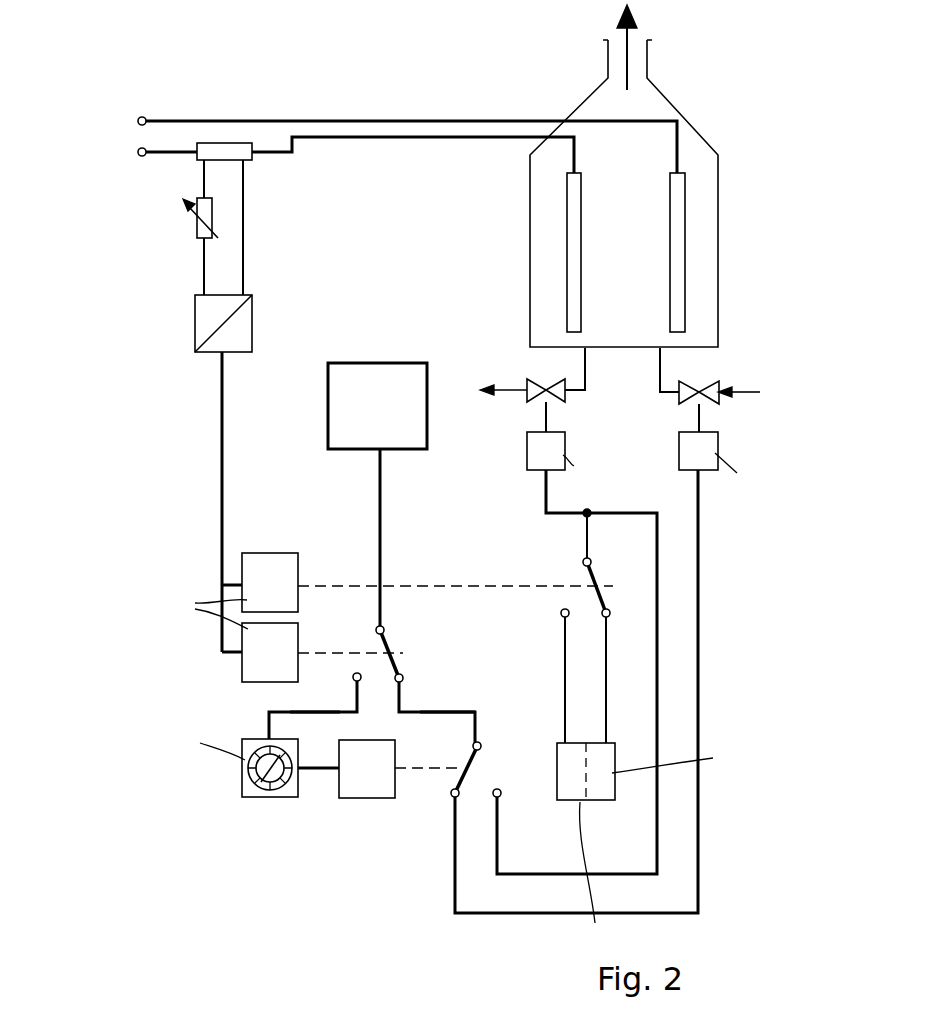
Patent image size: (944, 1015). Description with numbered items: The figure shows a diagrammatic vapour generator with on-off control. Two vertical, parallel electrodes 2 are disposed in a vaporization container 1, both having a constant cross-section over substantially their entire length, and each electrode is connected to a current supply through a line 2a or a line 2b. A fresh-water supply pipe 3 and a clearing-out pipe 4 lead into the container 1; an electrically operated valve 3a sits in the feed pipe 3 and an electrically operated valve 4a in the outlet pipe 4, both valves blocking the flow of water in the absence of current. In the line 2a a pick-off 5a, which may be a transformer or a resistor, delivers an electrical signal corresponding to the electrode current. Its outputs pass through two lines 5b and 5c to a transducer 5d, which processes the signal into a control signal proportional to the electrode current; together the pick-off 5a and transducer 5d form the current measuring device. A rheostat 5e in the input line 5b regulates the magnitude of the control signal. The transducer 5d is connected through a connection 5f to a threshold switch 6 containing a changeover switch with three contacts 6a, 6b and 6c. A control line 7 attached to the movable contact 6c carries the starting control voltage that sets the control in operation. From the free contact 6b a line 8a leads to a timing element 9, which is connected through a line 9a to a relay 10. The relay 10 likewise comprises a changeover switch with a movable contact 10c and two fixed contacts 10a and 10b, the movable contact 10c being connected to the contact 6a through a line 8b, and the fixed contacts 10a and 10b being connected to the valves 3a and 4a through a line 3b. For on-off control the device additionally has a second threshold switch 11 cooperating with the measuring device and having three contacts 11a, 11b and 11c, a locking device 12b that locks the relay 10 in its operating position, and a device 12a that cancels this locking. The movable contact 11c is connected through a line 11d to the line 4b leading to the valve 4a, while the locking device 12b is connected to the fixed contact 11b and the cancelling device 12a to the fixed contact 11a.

The vaporization container 1 is at (716, 192).
The electrodes 2 is at (576, 283).
The line 2a is at (472, 139).
The line 2b is at (466, 121).
The fresh-water supply pipe 3 is at (660, 376).
The electrically operated valve 3a is at (700, 418).
The line 3b is at (490, 916).
The clearing-out pipe 4 is at (585, 372).
The electrically operated valve 4a is at (546, 418).
The line 4b is at (538, 876).
The pick-off 5a is at (235, 153).
The line 5b is at (203, 261).
The line 5c is at (246, 263).
The transducer 5d is at (243, 337).
The rheostat 5e is at (205, 208).
The connection 5f is at (223, 418).
The threshold switch 6 is at (242, 665).
The contact 6a is at (404, 679).
The free contact 6b is at (353, 678).
The movable contact 6c is at (384, 630).
The control line 7 is at (382, 522).
The line 8a is at (313, 713).
The line 8b is at (474, 710).
The timing element 9 is at (263, 795).
The line 9a is at (315, 771).
The relay 10 is at (360, 790).
The fixed contact 10a is at (452, 795).
The fixed contact 10b is at (500, 797).
The movable contact 10c is at (656, 836).
The second threshold switch 11 is at (277, 564).
The fixed contact 11a is at (610, 616).
The fixed contact 11b is at (562, 614).
The movable contact 11c is at (590, 560).
The line 11d is at (586, 530).
The device for cancelling the locking 12a is at (607, 790).
The locking device 12b is at (573, 790).